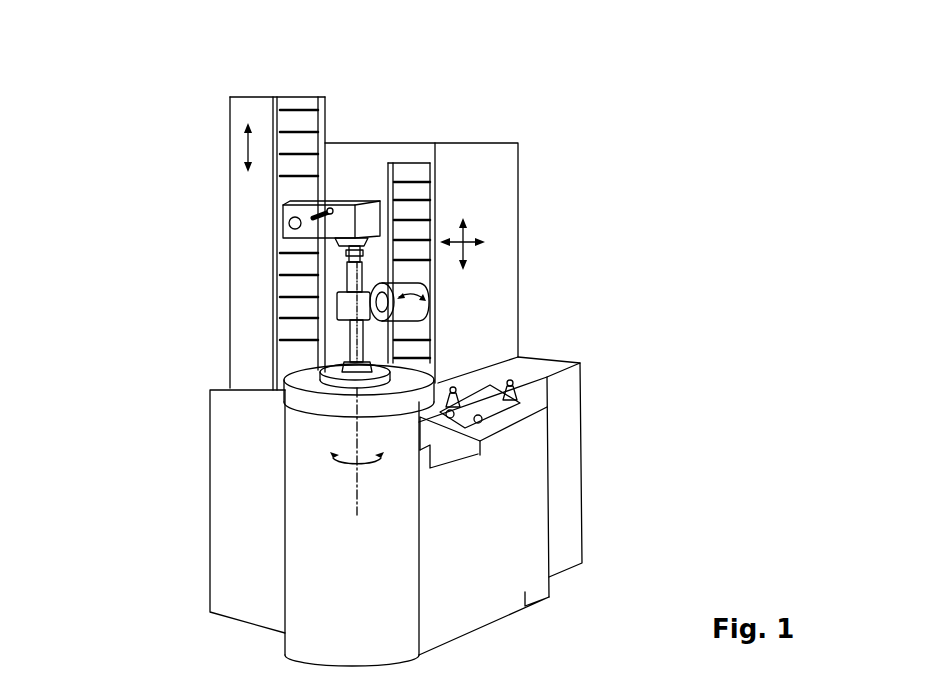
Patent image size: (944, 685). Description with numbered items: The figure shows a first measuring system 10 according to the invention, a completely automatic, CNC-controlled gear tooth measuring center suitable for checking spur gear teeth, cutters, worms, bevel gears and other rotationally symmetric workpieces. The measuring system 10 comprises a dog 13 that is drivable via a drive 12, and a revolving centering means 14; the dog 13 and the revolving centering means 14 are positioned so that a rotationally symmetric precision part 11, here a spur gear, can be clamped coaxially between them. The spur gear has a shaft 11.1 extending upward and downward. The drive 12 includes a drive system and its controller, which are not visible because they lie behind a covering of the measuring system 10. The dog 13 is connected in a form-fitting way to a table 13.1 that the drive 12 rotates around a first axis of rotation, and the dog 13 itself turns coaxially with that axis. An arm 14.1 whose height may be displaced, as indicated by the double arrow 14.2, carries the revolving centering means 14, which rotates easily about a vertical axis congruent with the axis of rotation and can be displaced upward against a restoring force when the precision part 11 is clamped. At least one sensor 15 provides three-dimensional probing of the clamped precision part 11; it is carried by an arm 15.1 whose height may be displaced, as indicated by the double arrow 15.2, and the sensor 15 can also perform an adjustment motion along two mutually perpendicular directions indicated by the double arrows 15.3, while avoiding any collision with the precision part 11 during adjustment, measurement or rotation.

The measuring system 10 is at (579, 80).
The precision part 11 is at (337, 306).
The shaft 11.1 is at (343, 280).
The drive 12 is at (305, 551).
The dog 13 is at (300, 374).
The table 13.1 is at (305, 407).
The revolving centering means 14 is at (340, 258).
The arm 14.1 is at (290, 209).
The double arrow 14.2 is at (229, 145).
The sensor 15 is at (425, 281).
The arm 15.1 is at (430, 329).
The double arrow 15.2 is at (465, 217).
The double arrows 15.3 is at (240, 97).